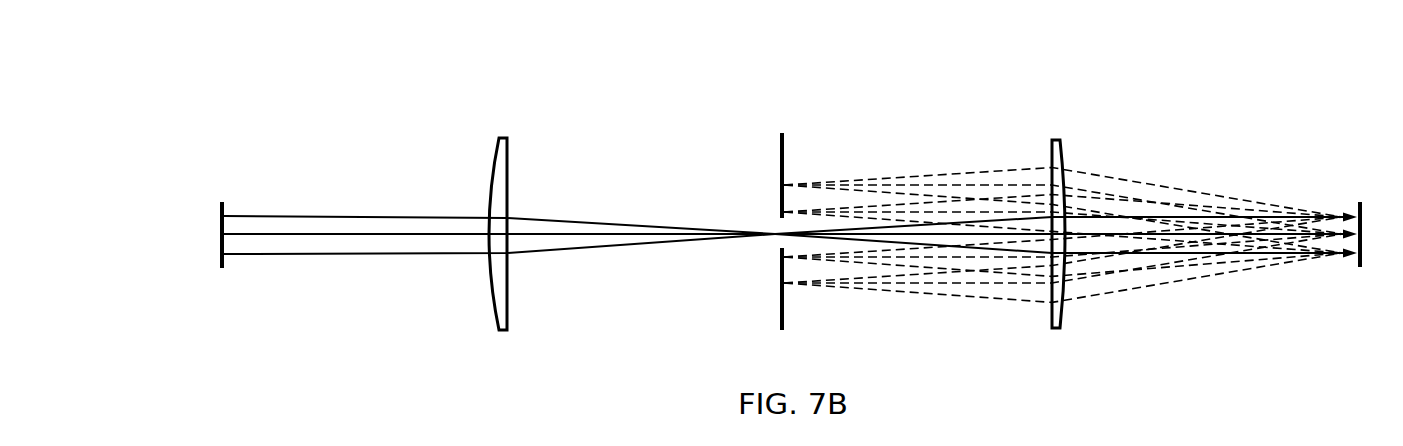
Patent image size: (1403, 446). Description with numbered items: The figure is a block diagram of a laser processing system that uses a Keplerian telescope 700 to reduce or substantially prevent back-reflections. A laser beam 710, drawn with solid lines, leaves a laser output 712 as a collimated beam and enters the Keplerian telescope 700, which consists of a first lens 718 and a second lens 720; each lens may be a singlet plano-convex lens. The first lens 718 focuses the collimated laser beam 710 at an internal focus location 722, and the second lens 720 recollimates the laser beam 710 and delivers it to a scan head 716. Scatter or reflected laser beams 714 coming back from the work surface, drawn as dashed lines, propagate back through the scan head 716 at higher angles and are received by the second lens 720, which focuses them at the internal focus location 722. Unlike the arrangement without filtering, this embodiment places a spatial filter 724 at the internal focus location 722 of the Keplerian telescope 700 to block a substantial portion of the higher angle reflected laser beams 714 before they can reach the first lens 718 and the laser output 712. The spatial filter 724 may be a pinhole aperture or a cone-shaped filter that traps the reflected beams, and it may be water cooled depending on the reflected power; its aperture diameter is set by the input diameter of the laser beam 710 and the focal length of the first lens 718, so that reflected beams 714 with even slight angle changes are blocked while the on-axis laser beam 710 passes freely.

The Keplerian telescope 700 is at (383, 76).
The laser beam 710 is at (447, 216).
The laser output 712 is at (225, 207).
The reflected laser beams 714 is at (1164, 182).
The scan head 716 is at (1358, 206).
The first lens 718 is at (507, 145).
The second lens 720 is at (1052, 140).
The internal focus location 722 is at (768, 222).
The spatial filter 724 is at (783, 138).